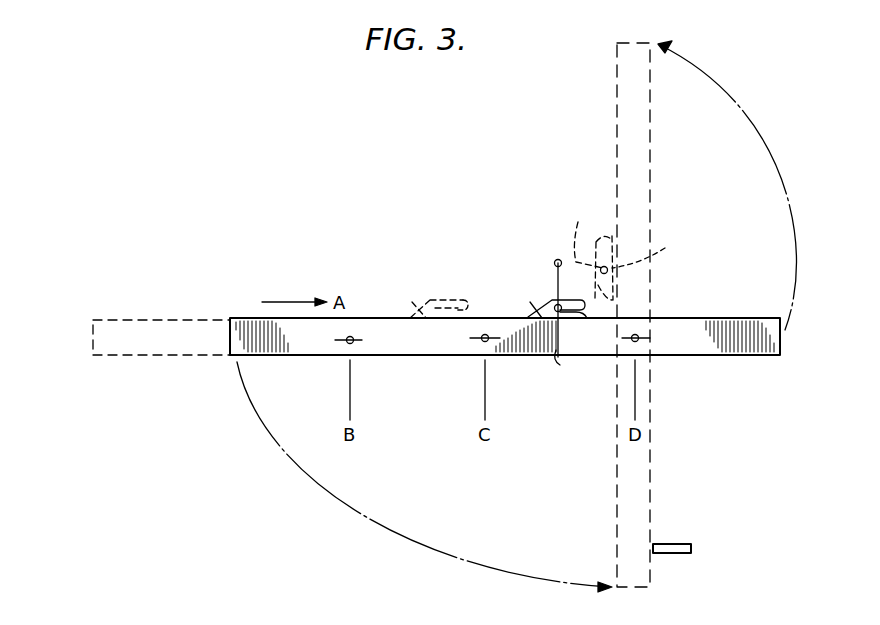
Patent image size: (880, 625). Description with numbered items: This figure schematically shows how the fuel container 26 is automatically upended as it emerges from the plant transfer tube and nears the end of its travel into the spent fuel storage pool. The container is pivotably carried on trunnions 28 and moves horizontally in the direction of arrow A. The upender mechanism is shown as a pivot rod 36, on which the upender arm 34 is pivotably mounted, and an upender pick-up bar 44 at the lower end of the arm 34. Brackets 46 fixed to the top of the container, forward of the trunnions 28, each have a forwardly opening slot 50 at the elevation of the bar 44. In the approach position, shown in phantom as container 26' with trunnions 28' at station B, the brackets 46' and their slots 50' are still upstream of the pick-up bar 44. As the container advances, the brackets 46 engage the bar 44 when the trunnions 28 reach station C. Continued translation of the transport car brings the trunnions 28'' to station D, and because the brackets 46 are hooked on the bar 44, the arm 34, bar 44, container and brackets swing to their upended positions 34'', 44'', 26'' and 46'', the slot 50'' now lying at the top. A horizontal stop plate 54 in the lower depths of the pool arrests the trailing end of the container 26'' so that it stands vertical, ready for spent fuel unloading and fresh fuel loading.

The fuel container 26 is at (505, 353).
The fuel container in approach position 26' is at (161, 308).
The fuel container in upended position 26'' is at (665, 315).
The trunnions 28 is at (466, 338).
The fuel container trunnions at approach position B 28' is at (327, 340).
The fuel container trunnions at position D 28'' is at (661, 359).
The upender arm 34 is at (531, 305).
The upender arm in upended position 34'' is at (580, 232).
The pivot rod 36 is at (556, 258).
The upender pick-up bar 44 is at (569, 368).
The upender pick-up bar in upended position 44'' is at (650, 246).
The brackets 46 is at (537, 302).
The fuel container upender brackets at approach position 46' is at (424, 292).
The fuel container brackets in upended position 46'' is at (641, 268).
The open slot 50 is at (579, 327).
The open slot at approach position 50' is at (470, 279).
The open slot in upended position 50'' is at (596, 211).
The stop plate 54 is at (672, 554).